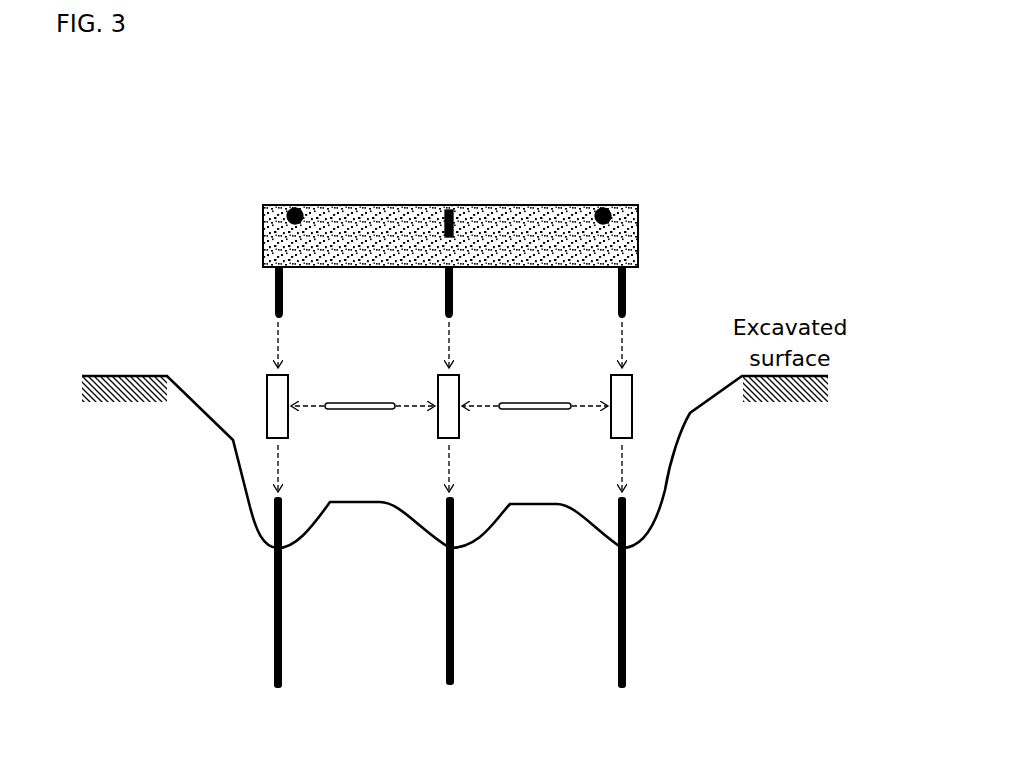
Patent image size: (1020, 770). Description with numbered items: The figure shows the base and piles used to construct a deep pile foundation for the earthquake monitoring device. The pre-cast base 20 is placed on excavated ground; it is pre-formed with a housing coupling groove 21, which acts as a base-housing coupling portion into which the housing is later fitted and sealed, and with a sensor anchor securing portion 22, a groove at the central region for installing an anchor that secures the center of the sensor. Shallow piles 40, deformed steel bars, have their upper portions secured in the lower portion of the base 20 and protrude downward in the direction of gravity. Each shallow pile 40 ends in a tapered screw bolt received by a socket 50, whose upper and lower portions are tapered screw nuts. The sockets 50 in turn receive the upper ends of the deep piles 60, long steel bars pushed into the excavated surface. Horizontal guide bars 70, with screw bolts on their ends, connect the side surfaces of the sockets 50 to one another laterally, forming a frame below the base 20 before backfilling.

The base 20 is at (632, 233).
The housing coupling groove 21 is at (298, 207).
The sensor anchor securing portion 22 is at (449, 207).
The shallow piles 40 is at (616, 294).
The sockets 50 is at (609, 426).
The deep piles 60 is at (616, 674).
The guide bars 70 is at (366, 404).